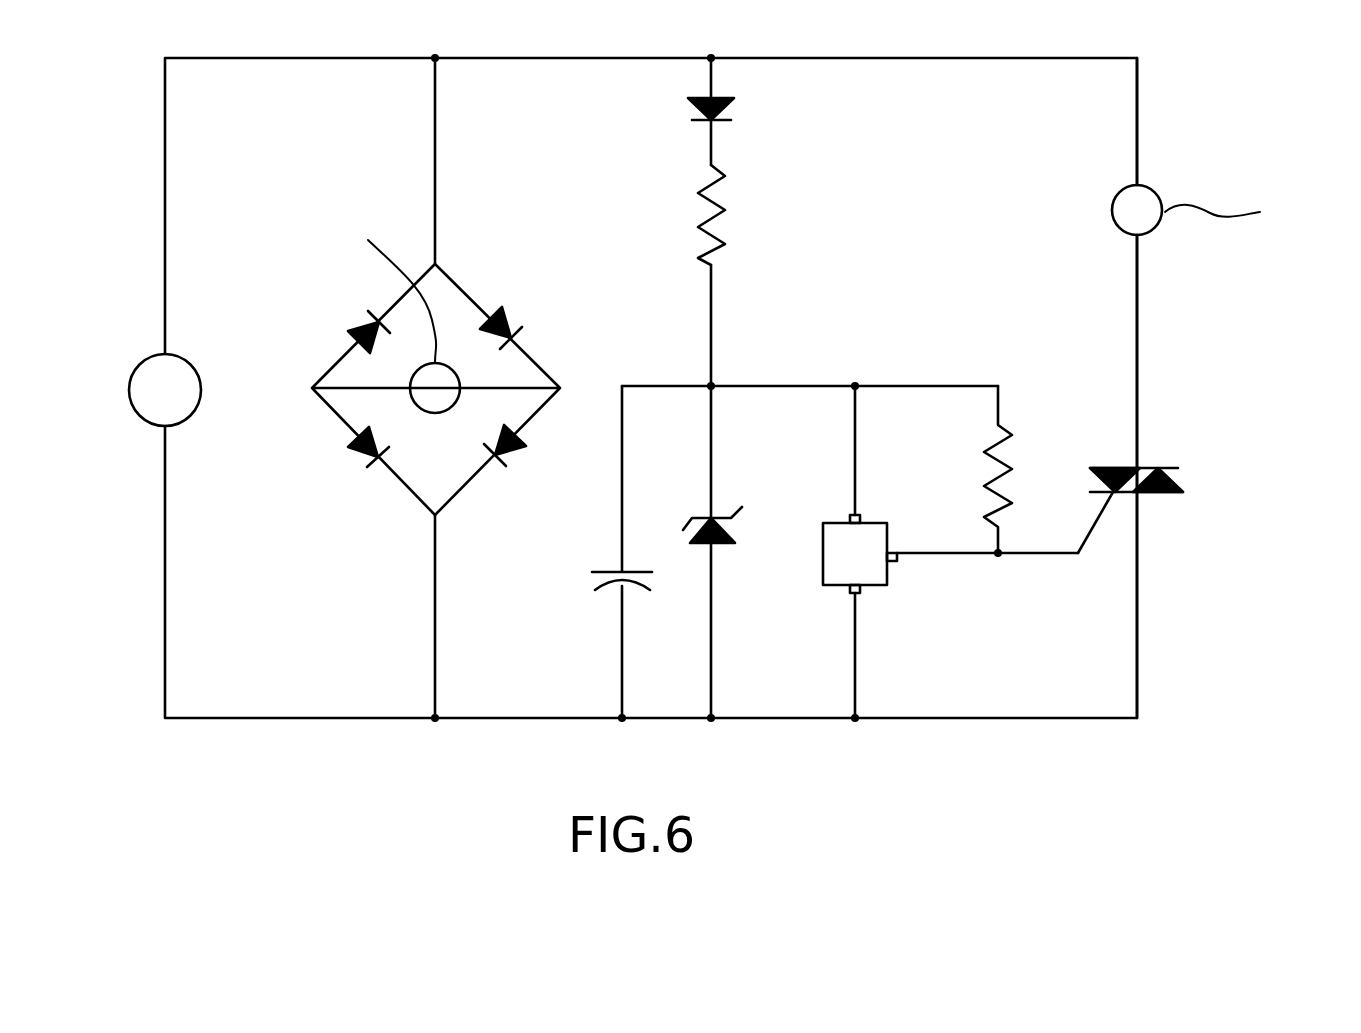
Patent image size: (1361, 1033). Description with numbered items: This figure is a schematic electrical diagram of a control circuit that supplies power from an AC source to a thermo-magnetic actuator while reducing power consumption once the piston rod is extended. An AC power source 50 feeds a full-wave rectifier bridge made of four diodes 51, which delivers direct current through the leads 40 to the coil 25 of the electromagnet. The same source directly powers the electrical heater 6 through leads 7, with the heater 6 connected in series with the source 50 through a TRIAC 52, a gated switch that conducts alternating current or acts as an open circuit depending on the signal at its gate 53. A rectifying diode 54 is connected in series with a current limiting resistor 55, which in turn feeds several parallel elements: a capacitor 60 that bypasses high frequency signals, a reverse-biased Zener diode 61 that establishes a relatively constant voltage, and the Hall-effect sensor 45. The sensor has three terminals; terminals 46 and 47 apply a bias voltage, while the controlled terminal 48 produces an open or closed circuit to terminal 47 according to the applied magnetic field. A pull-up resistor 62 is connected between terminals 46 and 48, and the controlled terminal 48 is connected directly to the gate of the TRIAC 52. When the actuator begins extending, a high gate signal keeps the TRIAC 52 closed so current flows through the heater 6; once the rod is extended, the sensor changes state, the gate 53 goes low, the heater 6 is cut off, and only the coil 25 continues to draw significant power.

The electrical heater 6 is at (1155, 228).
The leads 7 is at (1138, 115).
The coil 25 is at (435, 413).
The leads 40 is at (348, 388).
The Hall-effect sensor 45 is at (833, 587).
The terminal 46 is at (855, 428).
The terminal 47 is at (857, 668).
The controlled terminal 48 is at (947, 556).
The AC power source 50 is at (150, 423).
The diodes 51 is at (513, 322).
The TRIAC 52 is at (1180, 480).
The gate 53 is at (1062, 556).
The rectifying diode 54 is at (688, 101).
The current limiting resistor 55 is at (722, 220).
The capacitor 60 is at (606, 572).
The Zener diode 61 is at (722, 545).
The pull-up resistor 62 is at (1010, 472).